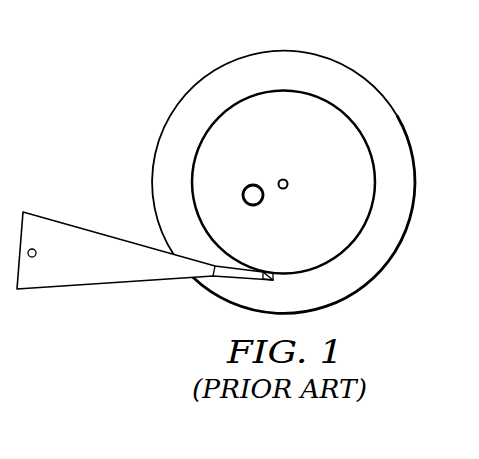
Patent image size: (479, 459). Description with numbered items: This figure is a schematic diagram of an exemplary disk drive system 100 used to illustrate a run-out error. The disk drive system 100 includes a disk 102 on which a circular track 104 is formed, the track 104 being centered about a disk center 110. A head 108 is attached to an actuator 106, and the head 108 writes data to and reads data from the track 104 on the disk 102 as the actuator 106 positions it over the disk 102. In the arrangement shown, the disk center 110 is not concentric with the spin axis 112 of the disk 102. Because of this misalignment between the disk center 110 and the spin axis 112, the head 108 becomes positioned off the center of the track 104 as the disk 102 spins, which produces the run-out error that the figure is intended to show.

The disk drive system 100 is at (92, 114).
The disk 102 is at (196, 98).
The circular track 104 is at (377, 184).
The actuator 106 is at (83, 226).
The head 108 is at (270, 271).
The disk center 110 is at (288, 183).
The spin axis 112 is at (250, 184).